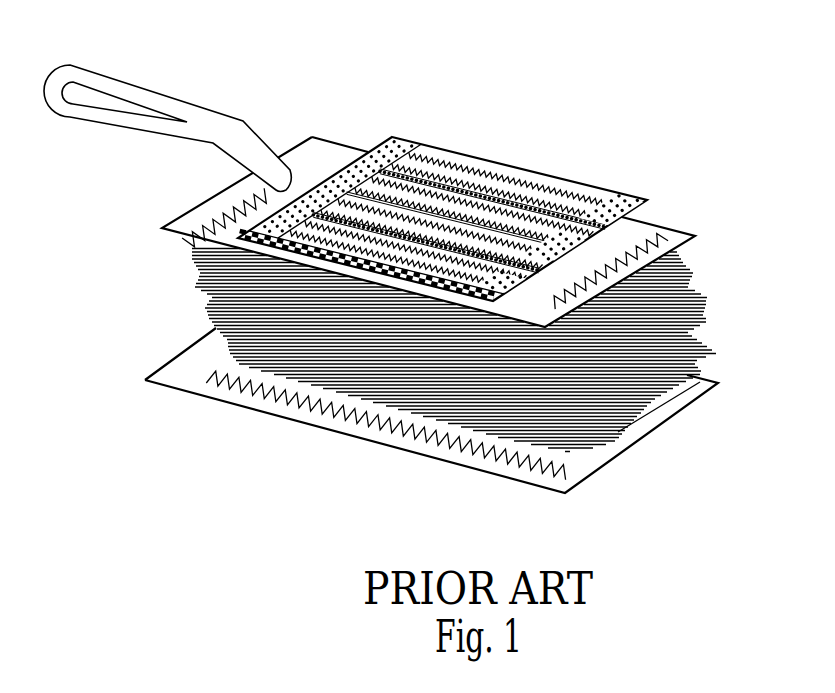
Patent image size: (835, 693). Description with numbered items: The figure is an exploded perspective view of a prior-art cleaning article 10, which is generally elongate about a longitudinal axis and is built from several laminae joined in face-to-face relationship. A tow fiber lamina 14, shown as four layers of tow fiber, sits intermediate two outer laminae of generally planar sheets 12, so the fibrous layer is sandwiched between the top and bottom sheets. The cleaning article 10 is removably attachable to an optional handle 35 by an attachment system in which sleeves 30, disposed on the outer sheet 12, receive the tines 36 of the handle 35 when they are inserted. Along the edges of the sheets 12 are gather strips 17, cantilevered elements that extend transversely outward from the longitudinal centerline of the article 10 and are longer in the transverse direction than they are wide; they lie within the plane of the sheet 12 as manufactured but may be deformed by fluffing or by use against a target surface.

The cleaning article 10 is at (474, 130).
The generally planar sheet 12 is at (650, 199).
The tow fiber lamina 14 is at (705, 230).
The gather strips 17 is at (228, 223).
The sleeves 30 is at (558, 120).
The handle 35 is at (105, 120).
The tines 36 is at (300, 68).